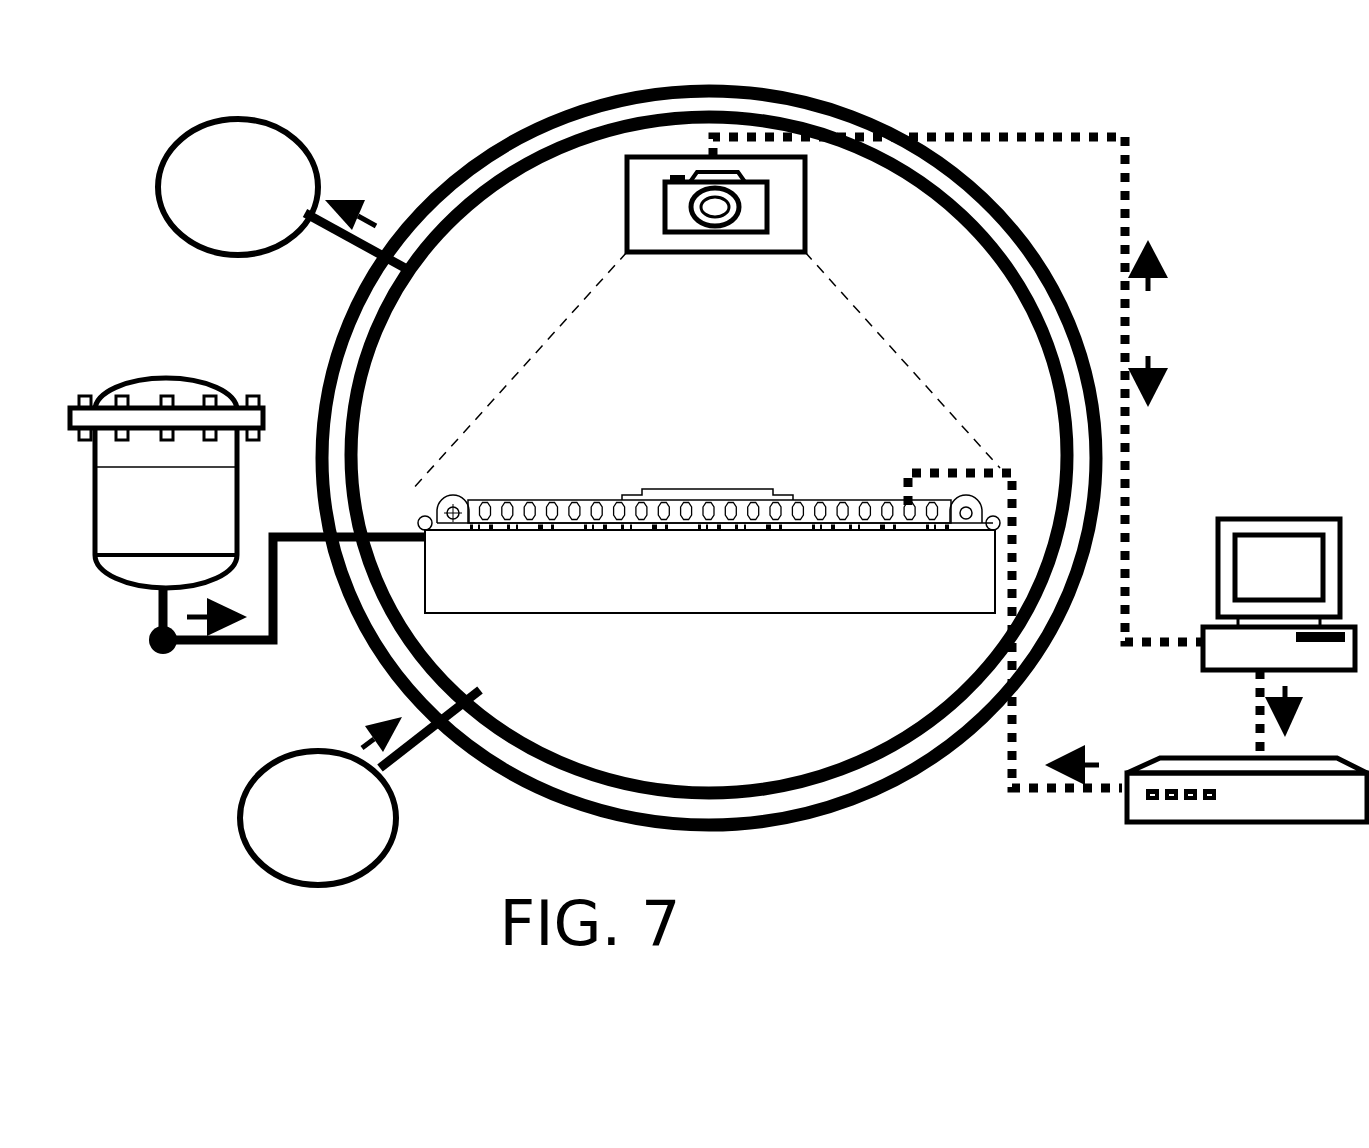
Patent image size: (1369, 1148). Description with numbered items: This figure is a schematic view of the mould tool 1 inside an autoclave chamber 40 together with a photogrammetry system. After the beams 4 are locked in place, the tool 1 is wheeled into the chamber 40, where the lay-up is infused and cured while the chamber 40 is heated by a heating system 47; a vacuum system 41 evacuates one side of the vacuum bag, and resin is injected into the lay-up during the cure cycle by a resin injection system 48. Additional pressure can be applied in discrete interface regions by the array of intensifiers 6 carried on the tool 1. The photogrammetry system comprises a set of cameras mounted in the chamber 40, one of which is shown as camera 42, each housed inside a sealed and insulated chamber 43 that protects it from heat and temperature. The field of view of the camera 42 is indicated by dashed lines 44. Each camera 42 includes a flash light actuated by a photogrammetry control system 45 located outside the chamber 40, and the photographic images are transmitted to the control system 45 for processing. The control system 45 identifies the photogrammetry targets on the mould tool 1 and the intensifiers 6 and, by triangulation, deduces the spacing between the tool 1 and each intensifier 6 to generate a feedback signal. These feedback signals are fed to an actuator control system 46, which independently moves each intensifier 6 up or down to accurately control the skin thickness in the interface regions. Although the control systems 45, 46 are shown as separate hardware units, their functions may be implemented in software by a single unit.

The mould tool 1 is at (728, 590).
The beams 4 is at (560, 510).
The intensifiers 6 is at (777, 523).
The autoclave chamber 40 is at (784, 807).
The vacuum system 41 is at (207, 150).
The photogrammetry camera 42 is at (678, 197).
The sealed and insulated chamber 43 is at (627, 197).
The dashed lines 44 is at (503, 383).
The photogrammetry control system 45 is at (1275, 523).
The actuator control system 46 is at (1243, 805).
The heating system 47 is at (296, 858).
The resin injection system 48 is at (163, 487).